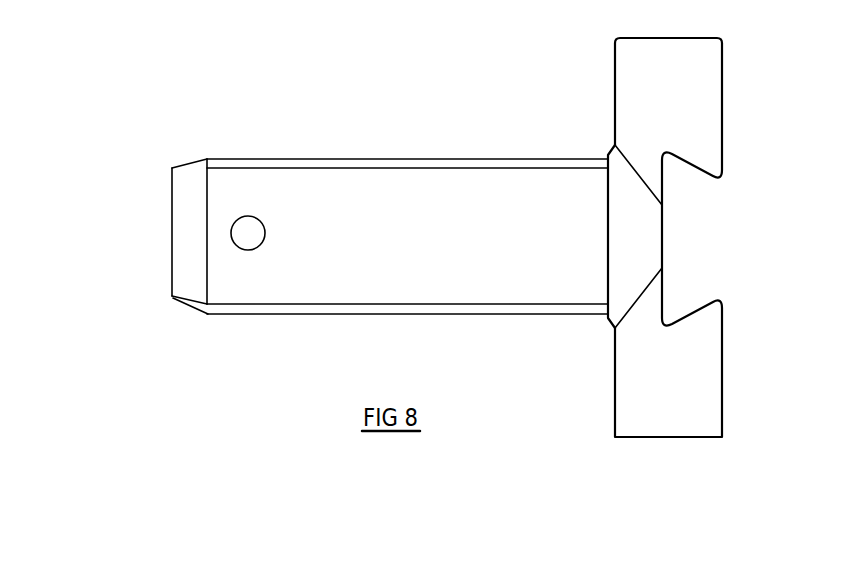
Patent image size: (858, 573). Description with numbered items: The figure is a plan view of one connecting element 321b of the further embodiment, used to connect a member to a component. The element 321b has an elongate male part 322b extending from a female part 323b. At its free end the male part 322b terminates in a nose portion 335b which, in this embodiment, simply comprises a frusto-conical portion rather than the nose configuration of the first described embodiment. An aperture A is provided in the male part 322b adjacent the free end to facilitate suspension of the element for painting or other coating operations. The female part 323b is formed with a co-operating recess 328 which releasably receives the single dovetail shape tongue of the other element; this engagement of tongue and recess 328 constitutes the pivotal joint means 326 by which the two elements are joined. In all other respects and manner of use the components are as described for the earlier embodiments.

The element 321b is at (412, 158).
The male part 322b is at (297, 177).
The nose portion 335b is at (188, 180).
The aperture A is at (258, 230).
The female part 323b is at (726, 343).
The pivotal joint means 326 is at (722, 209).
The recess 328 is at (700, 303).